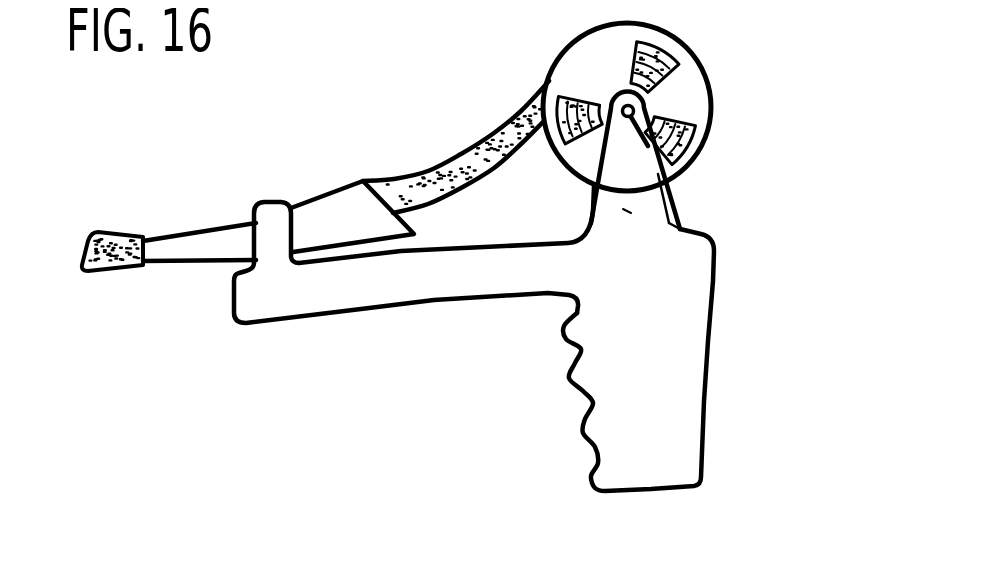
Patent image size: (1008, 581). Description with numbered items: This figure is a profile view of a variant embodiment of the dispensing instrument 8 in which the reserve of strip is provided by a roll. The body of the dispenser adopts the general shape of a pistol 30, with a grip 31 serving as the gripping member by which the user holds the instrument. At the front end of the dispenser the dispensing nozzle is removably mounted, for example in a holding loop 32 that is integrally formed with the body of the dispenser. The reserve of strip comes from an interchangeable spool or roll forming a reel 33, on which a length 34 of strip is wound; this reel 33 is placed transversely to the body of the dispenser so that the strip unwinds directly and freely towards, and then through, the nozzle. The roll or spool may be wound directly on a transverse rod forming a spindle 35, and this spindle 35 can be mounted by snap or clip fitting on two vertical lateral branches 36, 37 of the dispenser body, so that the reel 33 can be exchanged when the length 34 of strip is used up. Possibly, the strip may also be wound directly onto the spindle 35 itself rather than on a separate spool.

The dispensing instrument 8 is at (412, 102).
The pistol 30 is at (500, 352).
The grip 31 is at (660, 408).
The holding loop 32 is at (272, 218).
The reel 33 is at (720, 92).
The length of strip 34 is at (702, 152).
The spindle 35 is at (680, 183).
The vertical lateral branch 36 is at (677, 205).
The vertical lateral branch 37 is at (622, 208).